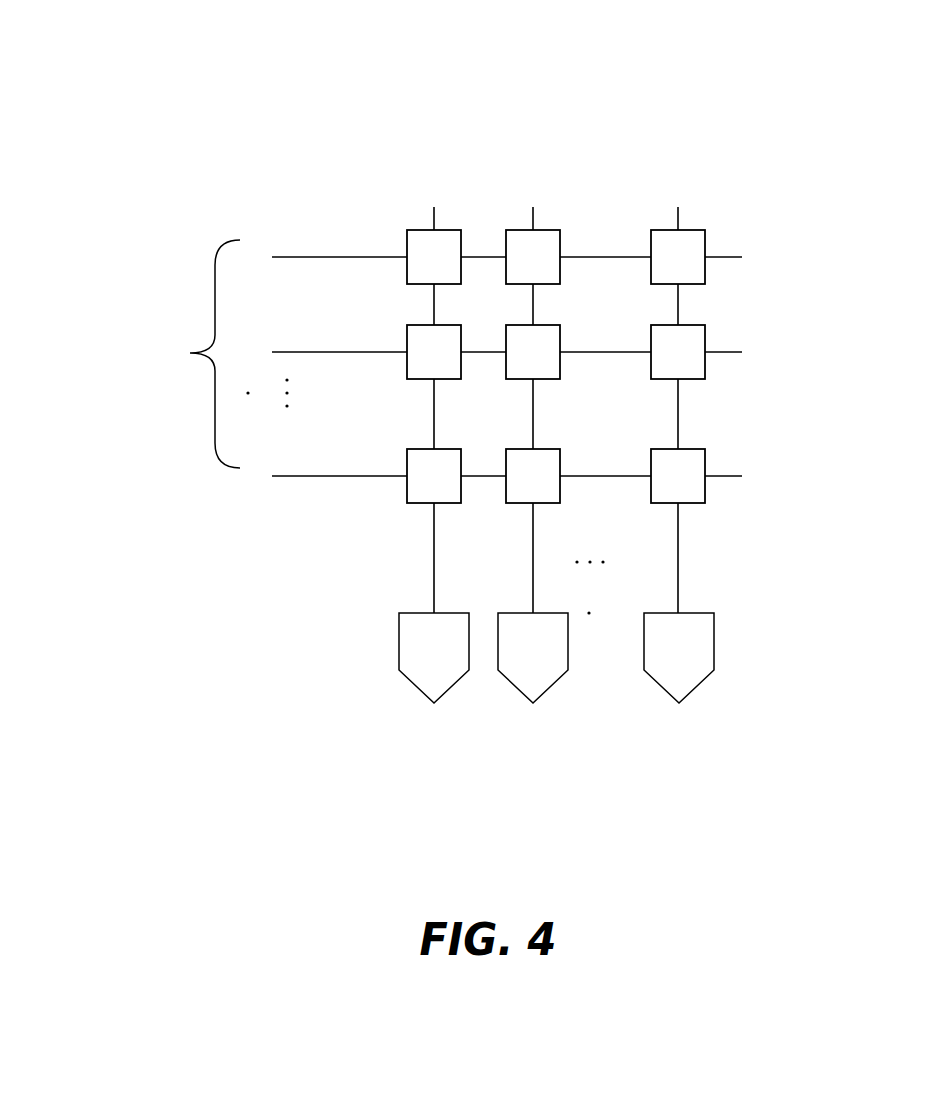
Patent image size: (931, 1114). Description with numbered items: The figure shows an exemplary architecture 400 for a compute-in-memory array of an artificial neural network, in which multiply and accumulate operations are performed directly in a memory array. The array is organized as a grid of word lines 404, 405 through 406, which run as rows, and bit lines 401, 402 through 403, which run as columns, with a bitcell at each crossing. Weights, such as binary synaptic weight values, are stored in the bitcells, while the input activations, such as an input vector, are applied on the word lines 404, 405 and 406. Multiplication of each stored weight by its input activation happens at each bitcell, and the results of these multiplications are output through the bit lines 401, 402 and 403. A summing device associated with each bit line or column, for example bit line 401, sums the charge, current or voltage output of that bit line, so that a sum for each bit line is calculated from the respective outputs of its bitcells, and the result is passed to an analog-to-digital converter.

The architecture 400 is at (284, 74).
The bit line 401 is at (428, 390).
The bit line 402 is at (528, 390).
The bit line 403 is at (673, 390).
The word line 404 is at (529, 258).
The word line 405 is at (529, 353).
The word line 406 is at (529, 477).